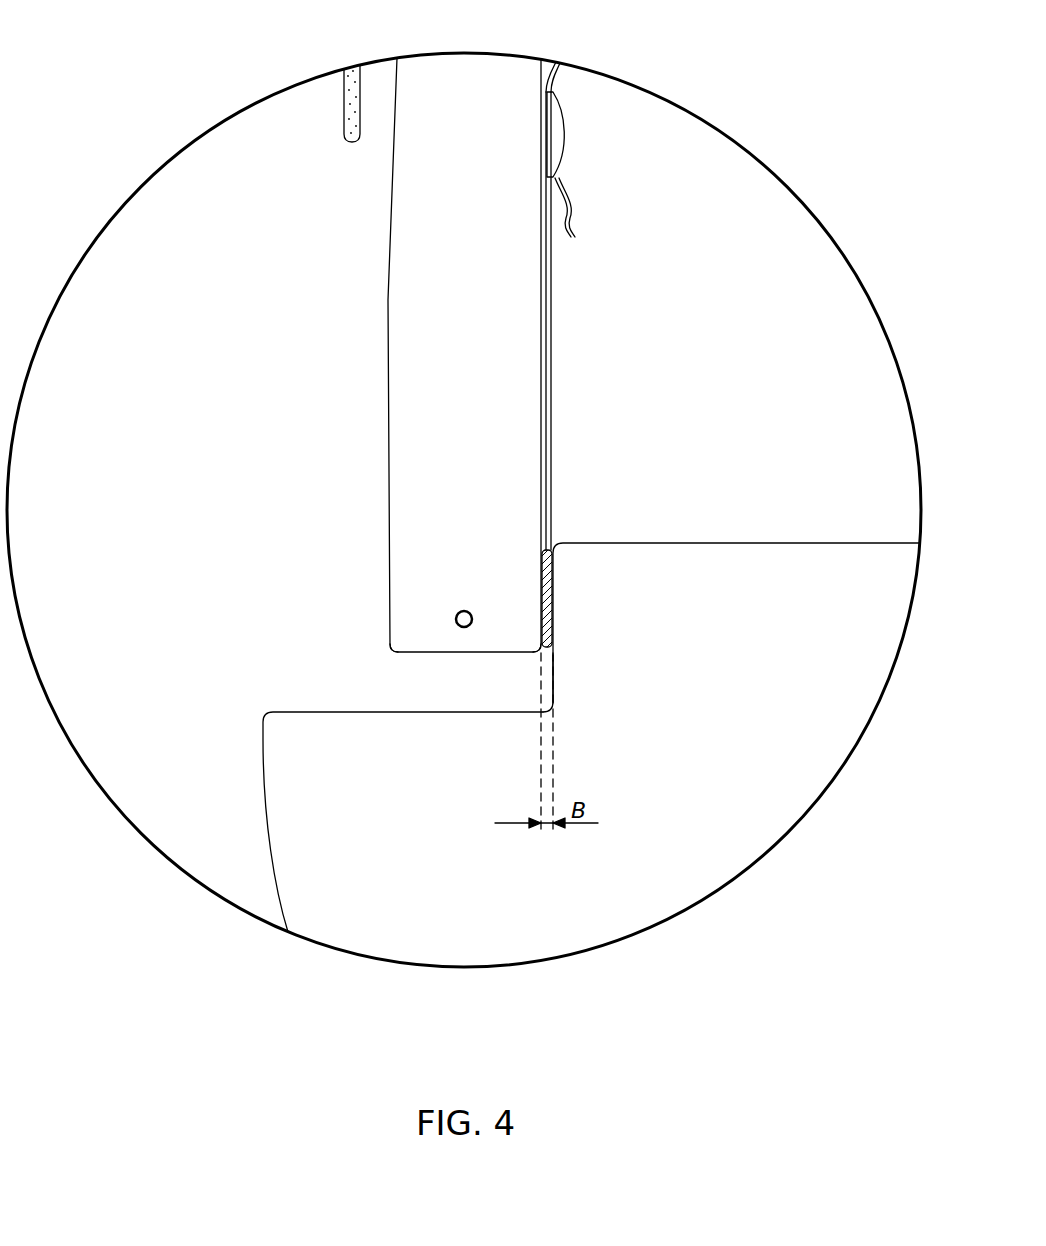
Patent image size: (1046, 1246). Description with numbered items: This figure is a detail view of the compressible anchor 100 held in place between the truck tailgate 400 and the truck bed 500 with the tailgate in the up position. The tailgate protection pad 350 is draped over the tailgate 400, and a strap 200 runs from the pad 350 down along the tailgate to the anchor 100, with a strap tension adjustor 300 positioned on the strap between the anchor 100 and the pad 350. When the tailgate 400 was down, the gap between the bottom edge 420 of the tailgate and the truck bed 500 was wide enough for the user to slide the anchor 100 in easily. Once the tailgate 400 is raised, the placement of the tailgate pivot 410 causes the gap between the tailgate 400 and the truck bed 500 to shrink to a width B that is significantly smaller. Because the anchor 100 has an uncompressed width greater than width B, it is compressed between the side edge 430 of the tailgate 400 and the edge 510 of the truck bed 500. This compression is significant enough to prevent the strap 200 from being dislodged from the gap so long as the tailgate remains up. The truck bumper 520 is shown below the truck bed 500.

The compressible anchor 100 is at (547, 616).
The strap 200 is at (552, 322).
The strap tension adjustor 300 is at (567, 140).
The tailgate protection pad 350 is at (344, 130).
The truck tailgate 400 is at (485, 244).
The tailgate pivot 410 is at (465, 610).
The bottom edge 420 is at (430, 652).
The side edge 430 is at (541, 625).
The truck bed 500 is at (741, 540).
The edge 510 is at (556, 673).
The bumper 520 is at (360, 821).